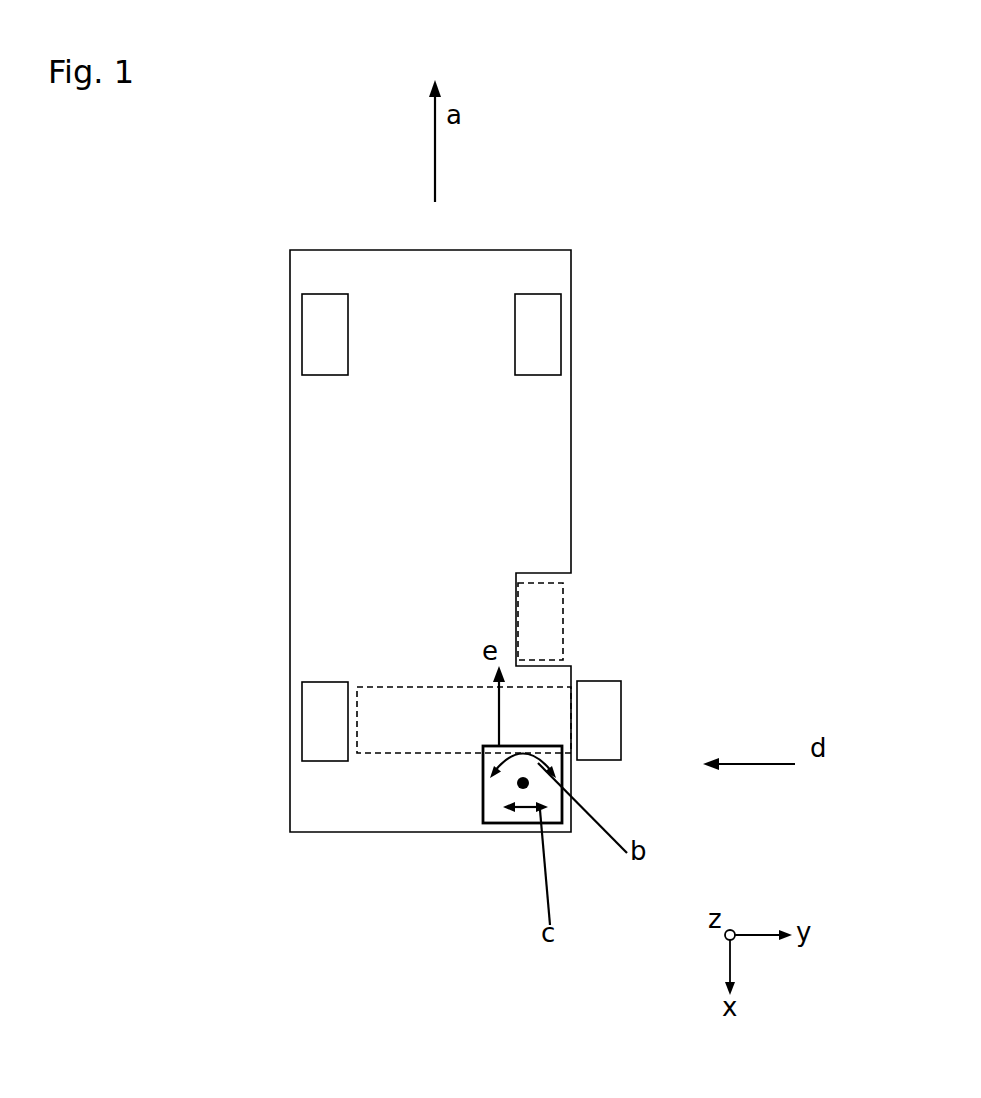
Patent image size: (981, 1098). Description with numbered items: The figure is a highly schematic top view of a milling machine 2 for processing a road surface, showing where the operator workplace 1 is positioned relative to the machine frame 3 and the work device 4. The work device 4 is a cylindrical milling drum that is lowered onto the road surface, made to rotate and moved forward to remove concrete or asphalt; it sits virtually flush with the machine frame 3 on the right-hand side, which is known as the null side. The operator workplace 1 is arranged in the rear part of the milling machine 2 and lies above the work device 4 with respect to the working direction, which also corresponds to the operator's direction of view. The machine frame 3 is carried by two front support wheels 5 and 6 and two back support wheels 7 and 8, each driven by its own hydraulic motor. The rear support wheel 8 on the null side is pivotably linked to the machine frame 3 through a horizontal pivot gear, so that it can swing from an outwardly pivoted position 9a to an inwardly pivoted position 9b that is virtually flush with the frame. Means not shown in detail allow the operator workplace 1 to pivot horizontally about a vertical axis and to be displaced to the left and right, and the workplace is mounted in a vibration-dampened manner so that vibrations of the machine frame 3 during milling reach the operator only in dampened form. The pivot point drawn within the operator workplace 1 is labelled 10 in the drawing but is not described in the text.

The operator workplace 1 is at (553, 815).
The milling machine 2 is at (668, 150).
The machine frame 3 is at (572, 425).
The work device 4 is at (435, 728).
The front support wheel 5 is at (323, 350).
The front support wheel 6 is at (548, 327).
The back support wheel 7 is at (323, 742).
The rear support wheel 8 is at (615, 708).
The outwardly pivoted position 9a is at (638, 762).
The inwardly pivoted position 9b is at (585, 579).
The pivot axis 10 is at (521, 792).